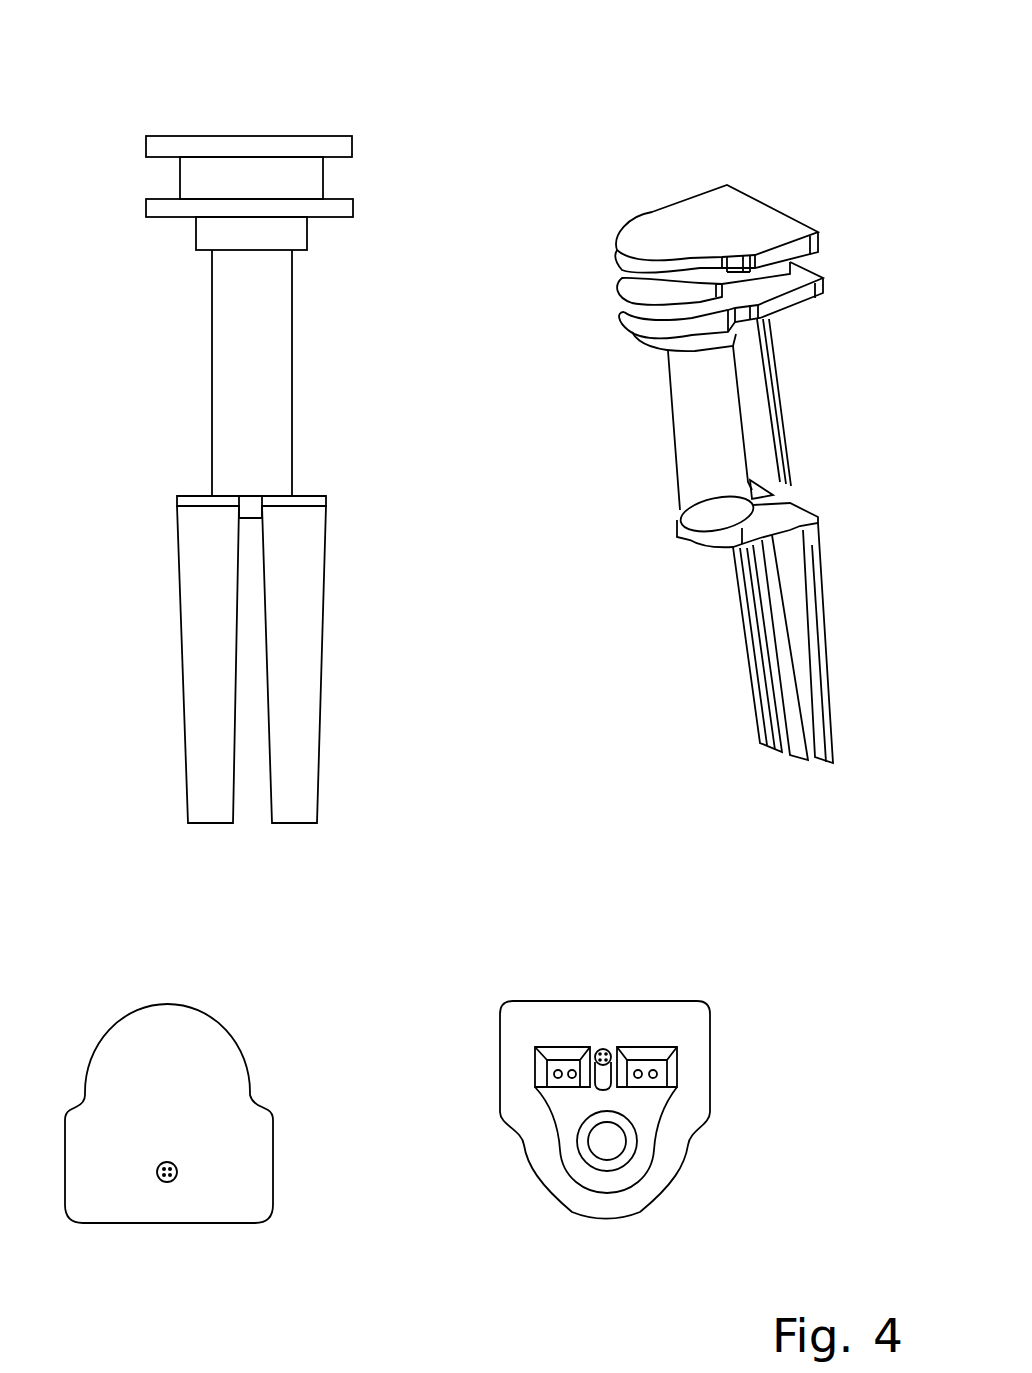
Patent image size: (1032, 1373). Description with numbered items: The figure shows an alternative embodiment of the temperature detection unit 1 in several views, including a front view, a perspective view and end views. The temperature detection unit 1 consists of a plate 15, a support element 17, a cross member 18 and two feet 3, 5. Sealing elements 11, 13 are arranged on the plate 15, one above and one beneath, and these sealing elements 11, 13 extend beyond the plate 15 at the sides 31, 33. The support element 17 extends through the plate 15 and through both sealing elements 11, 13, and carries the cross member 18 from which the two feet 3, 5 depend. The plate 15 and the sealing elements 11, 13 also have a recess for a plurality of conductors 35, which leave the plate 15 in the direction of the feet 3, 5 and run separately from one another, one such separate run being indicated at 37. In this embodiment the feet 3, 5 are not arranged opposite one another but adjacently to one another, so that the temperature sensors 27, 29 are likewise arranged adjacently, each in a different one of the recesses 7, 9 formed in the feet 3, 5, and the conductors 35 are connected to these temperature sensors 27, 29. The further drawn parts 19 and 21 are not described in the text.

The temperature detection unit 1 is at (302, 72).
The first foot 3 is at (208, 749).
The second foot 5 is at (297, 748).
The first recess 7 is at (777, 627).
The second recess 9 is at (747, 600).
The first sealing element 11 is at (355, 148).
The second sealing element 13 is at (315, 208).
The plate 15 is at (667, 290).
The support element 17 is at (250, 133).
The cross member 18 is at (682, 514).
The collar 19 is at (203, 237).
The head 21 is at (272, 118).
The first temperature sensor 27 is at (788, 680).
The second temperature sensor 29 is at (750, 657).
The first side 31 is at (345, 128).
The second side 33 is at (343, 225).
The conductors 35 is at (182, 1182).
The separate conductor run 37 is at (757, 388).